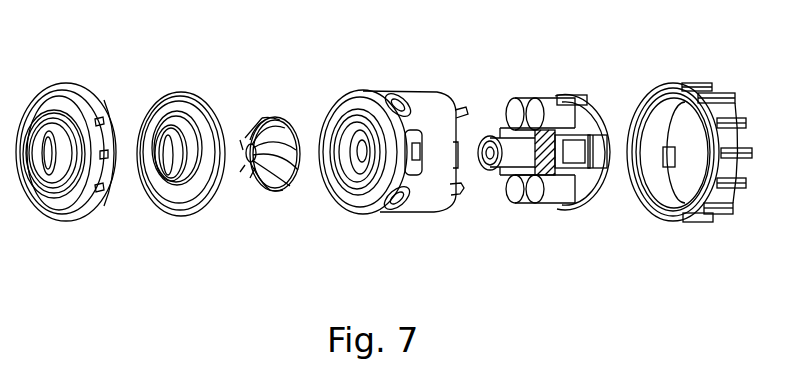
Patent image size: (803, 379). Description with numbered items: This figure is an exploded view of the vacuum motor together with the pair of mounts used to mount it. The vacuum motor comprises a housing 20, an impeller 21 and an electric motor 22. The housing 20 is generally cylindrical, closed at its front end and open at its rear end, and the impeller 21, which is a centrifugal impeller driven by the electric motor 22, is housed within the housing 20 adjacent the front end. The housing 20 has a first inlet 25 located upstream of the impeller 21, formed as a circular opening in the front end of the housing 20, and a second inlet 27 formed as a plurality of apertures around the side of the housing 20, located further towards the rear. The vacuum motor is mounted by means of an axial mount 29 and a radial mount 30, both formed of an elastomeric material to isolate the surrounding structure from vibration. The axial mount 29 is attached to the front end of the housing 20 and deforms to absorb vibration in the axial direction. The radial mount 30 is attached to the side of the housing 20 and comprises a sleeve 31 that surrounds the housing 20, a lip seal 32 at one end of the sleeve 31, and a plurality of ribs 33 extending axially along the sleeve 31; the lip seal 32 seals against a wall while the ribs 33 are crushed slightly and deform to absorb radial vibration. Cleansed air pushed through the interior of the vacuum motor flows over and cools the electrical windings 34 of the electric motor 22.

The housing 20 is at (182, 92).
The impeller 21 is at (273, 117).
The electric motor 22 is at (566, 95).
The first inlet 25 is at (158, 156).
The second inlet 27 is at (393, 206).
The axial mount 29 is at (71, 83).
The radial mount 30 is at (694, 148).
The sleeve 31 is at (728, 110).
The lip seal 32 is at (672, 222).
The ribs 33 is at (722, 215).
The electrical windings 34 is at (540, 175).